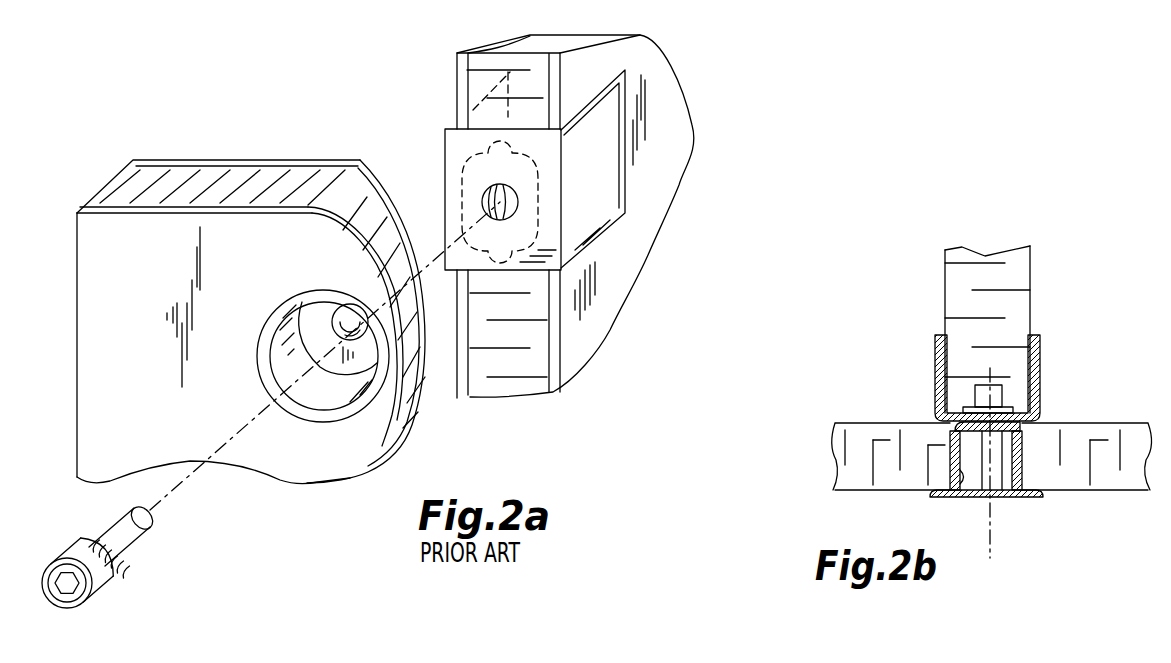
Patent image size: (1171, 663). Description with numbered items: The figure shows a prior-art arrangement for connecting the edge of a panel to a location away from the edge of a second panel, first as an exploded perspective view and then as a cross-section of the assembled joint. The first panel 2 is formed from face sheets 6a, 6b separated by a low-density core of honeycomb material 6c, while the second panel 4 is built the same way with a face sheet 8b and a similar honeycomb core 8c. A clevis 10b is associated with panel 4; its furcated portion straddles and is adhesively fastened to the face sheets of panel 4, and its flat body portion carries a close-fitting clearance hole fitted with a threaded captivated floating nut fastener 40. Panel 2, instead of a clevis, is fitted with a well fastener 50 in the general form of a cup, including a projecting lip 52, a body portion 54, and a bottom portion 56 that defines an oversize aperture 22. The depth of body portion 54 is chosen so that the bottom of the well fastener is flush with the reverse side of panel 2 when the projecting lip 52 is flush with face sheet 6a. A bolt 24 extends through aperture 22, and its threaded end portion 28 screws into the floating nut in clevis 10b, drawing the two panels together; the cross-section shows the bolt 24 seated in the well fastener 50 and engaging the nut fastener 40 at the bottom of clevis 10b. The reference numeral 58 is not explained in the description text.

In FIG. 2A, the panel 2 is at (97, 279).
In FIG. 2A, the panel 4 is at (657, 80).
In FIG. 2A, the face sheet 6a is at (106, 210).
In FIG. 2A, the face sheet 6b is at (328, 160).
In FIG. 2A, the honeycomb core 6c is at (218, 177).
In FIG. 2A, the face sheet 8b is at (600, 290).
In FIG. 2A, the honeycomb core 8c is at (495, 388).
In FIG. 2A, the clevis 10b is at (605, 175).
In FIG. 2B, the clevis 10b is at (1040, 357).
In FIG. 2A, the aperture 22 is at (350, 308).
In FIG. 2A, the bolt 24 is at (248, 375).
In FIG. 2A, the threaded end portion 28 is at (123, 510).
In FIG. 2A, the threaded captivated floating nut fastener 40 is at (463, 220).
In FIG. 2B, the threaded captivated floating nut fastener 40 is at (995, 395).
In FIG. 2A, the well fastener 50 is at (298, 391).
In FIG. 2B, the well fastener 50 is at (1013, 474).
In FIG. 2A, the projecting lip 52 is at (312, 420).
In FIG. 2B, the projecting lip 52 is at (1030, 497).
In FIG. 2A, the body portion 54 is at (270, 366).
In FIG. 2B, the body portion 54 is at (963, 498).
In FIG. 2A, the bottom portion 56 is at (317, 323).
In FIG. 2B, the bottom portion 56 is at (1025, 438).
In FIG. 2B, the bore 58 is at (983, 497).